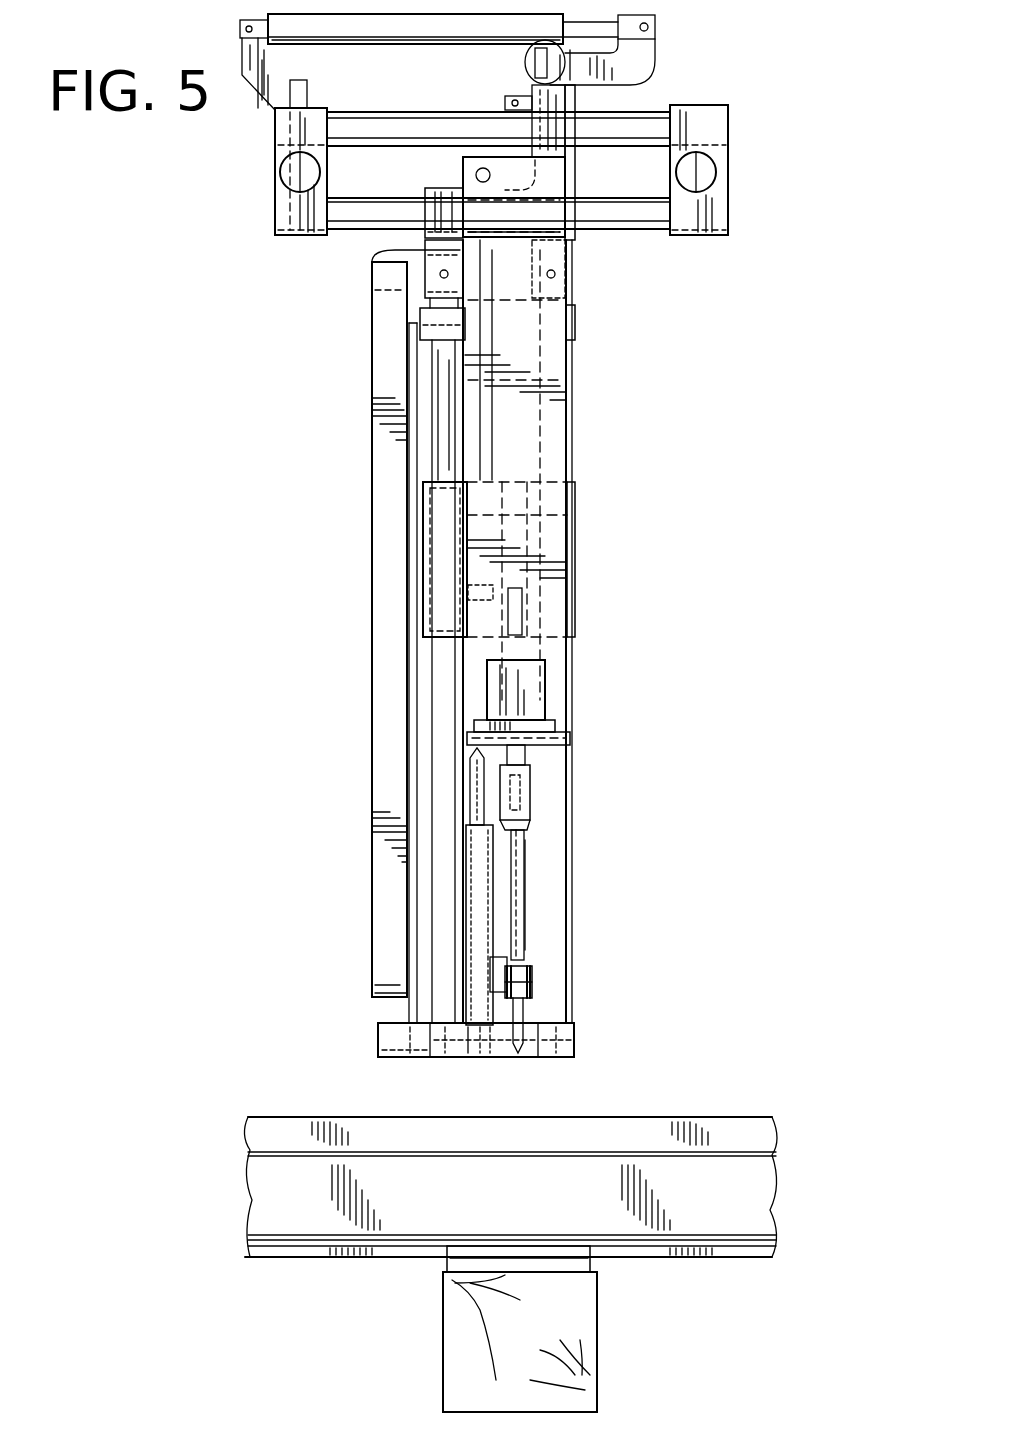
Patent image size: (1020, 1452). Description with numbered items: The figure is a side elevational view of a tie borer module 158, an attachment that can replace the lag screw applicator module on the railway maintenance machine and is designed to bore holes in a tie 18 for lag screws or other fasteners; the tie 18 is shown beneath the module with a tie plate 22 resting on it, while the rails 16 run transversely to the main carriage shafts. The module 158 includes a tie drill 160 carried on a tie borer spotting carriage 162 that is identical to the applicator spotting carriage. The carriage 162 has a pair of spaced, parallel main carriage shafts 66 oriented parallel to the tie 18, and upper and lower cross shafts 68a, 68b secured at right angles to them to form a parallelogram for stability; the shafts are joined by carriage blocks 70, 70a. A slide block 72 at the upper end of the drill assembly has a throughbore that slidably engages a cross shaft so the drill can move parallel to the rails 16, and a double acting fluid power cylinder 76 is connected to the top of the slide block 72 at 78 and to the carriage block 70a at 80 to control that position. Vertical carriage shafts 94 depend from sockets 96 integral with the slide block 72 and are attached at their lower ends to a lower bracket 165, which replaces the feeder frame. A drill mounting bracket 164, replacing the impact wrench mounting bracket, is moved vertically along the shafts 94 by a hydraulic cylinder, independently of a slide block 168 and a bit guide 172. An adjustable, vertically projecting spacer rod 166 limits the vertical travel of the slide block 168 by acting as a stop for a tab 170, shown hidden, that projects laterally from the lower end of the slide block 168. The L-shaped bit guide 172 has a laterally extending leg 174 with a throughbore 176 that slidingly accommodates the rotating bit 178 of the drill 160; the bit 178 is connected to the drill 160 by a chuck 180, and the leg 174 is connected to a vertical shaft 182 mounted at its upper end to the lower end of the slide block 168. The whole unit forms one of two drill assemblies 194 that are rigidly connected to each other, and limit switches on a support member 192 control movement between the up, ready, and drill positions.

The rails 16 is at (748, 1205).
The tie 18 is at (565, 1345).
The tie plate 22 is at (578, 1262).
The main carriage shafts 66 is at (297, 170).
The upper cross shaft 68a is at (372, 122).
The lower cross shaft 68b is at (335, 218).
The carriage block 70 is at (712, 240).
The carriage block 70a is at (283, 236).
The slide block 72 is at (577, 176).
The double acting fluid power cylinder 76 is at (400, 22).
The cylinder connection to slide block 78 is at (658, 27).
The cylinder connection to carriage block 80 is at (240, 28).
The vertical carriage shafts 94 is at (445, 818).
The sockets 96 is at (423, 246).
The tie borer module 158 is at (775, 88).
The tie drill 160 is at (550, 712).
The tie borer spotting carriage 162 is at (215, 155).
The drill mounting bracket 164 is at (555, 470).
The lower bracket 165 is at (575, 1050).
The spacer rod 166 is at (476, 905).
The slide block 168 is at (553, 558).
The tab 170 is at (470, 593).
The bit guide 172 is at (526, 846).
The leg 174 is at (535, 996).
The throughbore 176 is at (540, 968).
The bit 178 is at (522, 930).
The chuck 180 is at (522, 795).
The vertical shaft 182 is at (527, 875).
The support member 192 is at (388, 668).
The drill assembly 194 is at (625, 383).